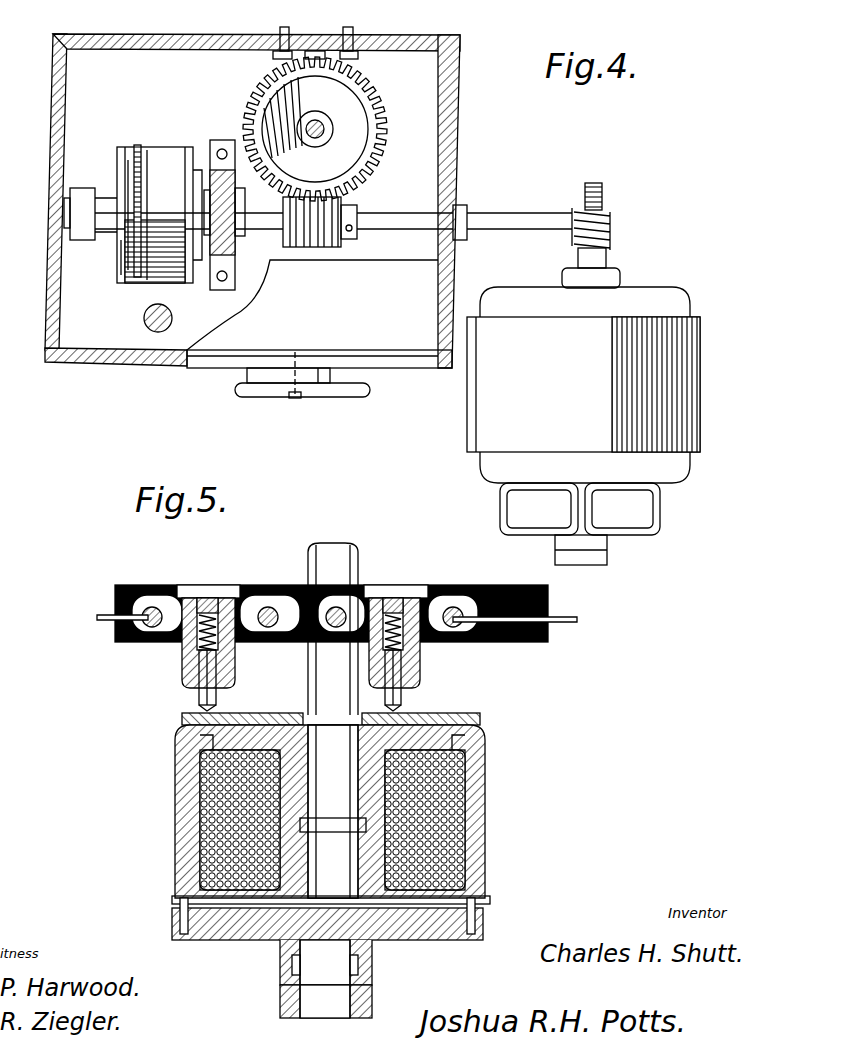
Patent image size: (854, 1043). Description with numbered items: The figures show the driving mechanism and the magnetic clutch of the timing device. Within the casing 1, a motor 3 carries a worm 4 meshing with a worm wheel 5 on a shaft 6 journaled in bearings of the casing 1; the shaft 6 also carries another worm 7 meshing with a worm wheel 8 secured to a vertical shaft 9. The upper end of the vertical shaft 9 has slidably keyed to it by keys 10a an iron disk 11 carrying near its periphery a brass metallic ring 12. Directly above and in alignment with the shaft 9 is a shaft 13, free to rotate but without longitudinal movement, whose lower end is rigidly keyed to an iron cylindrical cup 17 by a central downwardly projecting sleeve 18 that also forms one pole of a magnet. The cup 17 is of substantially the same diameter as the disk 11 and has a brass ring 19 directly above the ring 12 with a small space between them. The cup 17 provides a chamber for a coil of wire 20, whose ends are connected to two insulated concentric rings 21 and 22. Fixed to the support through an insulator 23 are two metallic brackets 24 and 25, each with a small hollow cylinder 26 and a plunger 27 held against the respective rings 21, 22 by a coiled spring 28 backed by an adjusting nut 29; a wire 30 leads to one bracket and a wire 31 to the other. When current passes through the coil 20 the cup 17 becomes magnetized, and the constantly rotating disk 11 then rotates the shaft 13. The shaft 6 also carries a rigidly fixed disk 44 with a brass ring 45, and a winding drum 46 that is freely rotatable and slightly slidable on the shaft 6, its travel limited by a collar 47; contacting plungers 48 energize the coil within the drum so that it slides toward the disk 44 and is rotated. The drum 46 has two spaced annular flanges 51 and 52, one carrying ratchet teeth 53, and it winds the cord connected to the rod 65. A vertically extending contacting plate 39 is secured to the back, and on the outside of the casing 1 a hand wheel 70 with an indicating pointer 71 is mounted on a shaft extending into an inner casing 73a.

In FIG. 4, the casing 1 is at (399, 372).
In FIG. 4, the motor 3 is at (583, 426).
In FIG. 4, the worm 4 is at (610, 222).
In FIG. 4, the worm wheel 5 is at (602, 190).
In FIG. 4, the shaft 6 is at (509, 222).
In FIG. 4, the worm 7 is at (348, 212).
In FIG. 4, the worm wheel 8 is at (385, 140).
In FIG. 4, the vertical shaft 9 is at (315, 147).
In FIG. 4, the contacting plate 39 is at (316, 50).
In FIG. 4, the disk 44 is at (135, 166).
In FIG. 4, the brass ring 45 is at (128, 270).
In FIG. 4, the winding drum 46 is at (164, 150).
In FIG. 4, the collar 47 is at (233, 226).
In FIG. 4, the contacting plungers 48 is at (222, 190).
In FIG. 4, the annular flange 51 is at (136, 216).
In FIG. 4, the annular flange 52 is at (184, 214).
In FIG. 4, the ratchet teeth 53 is at (137, 146).
In FIG. 4, the rod 65 is at (143, 322).
In FIG. 4, the hand wheel 70 is at (255, 392).
In FIG. 4, the indicating pointer 71 is at (250, 372).
In FIG. 4, the inner casing 73a is at (312, 305).
In FIG. 4, the ring 22 is at (300, 397).
In FIG. 5, the ring 22 is at (432, 712).
In FIG. 5, the keys 10a is at (290, 966).
In FIG. 5, the disk 11 is at (428, 936).
In FIG. 5, the metallic ring 12 is at (173, 912).
In FIG. 5, the shaft 13 is at (306, 678).
In FIG. 5, the cylindrical cup 17 is at (486, 825).
In FIG. 5, the sleeve 18 is at (302, 872).
In FIG. 5, the brass ring 19 is at (490, 901).
In FIG. 5, the coil of wire 20 is at (455, 782).
In FIG. 5, the ring 21 is at (190, 714).
In FIG. 5, the insulator 23 is at (492, 592).
In FIG. 5, the bracket 24 is at (250, 607).
In FIG. 5, the bracket 25 is at (435, 608).
In FIG. 5, the hollow cylinder 26 is at (185, 660).
In FIG. 5, the plunger 27 is at (205, 678).
In FIG. 5, the coiled spring 28 is at (205, 598).
In FIG. 5, the adjusting nut 29 is at (212, 590).
In FIG. 5, the wire 30 is at (100, 622).
In FIG. 5, the wire 31 is at (560, 619).